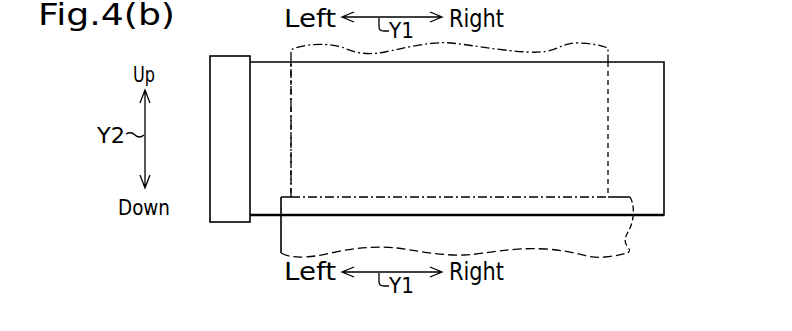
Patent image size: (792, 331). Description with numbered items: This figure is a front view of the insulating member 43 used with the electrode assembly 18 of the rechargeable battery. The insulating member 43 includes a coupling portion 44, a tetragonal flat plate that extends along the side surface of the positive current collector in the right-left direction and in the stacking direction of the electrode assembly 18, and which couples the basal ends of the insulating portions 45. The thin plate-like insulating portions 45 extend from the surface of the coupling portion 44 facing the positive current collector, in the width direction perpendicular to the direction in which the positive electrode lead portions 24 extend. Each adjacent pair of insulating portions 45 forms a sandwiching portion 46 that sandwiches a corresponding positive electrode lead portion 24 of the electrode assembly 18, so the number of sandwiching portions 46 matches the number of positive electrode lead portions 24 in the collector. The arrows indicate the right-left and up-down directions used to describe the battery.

The electrode assembly 18 is at (281, 237).
The positive electrode lead portion 24 is at (608, 102).
The insulating member 43 is at (704, 62).
The coupling portion 44 is at (221, 144).
The insulating portion 45 is at (506, 138).
The sandwiching portion 46 is at (646, 154).